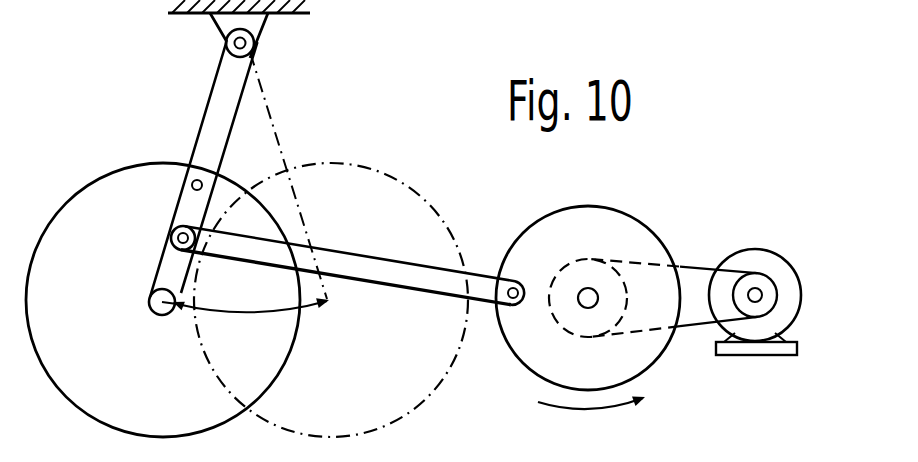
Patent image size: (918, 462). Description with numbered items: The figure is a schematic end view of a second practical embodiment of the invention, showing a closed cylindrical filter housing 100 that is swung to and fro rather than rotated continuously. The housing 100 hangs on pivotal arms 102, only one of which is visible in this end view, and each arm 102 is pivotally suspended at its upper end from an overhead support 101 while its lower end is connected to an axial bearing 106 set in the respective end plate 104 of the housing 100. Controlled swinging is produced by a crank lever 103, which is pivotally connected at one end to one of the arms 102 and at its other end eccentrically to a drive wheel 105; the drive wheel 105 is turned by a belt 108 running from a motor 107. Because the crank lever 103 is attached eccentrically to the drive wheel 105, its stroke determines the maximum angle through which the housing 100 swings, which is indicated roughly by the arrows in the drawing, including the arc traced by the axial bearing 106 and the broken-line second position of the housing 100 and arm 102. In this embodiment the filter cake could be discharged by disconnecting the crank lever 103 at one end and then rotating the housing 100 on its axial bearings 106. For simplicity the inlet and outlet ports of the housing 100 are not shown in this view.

The filter housing 100 is at (92, 216).
The overhead support 101 is at (257, 23).
The pivotal arm 102 is at (213, 116).
The crank lever 103 is at (395, 274).
The end plate 104 is at (112, 416).
The drive wheel 105 is at (633, 222).
The axial bearing 106 is at (148, 308).
The motor 107 is at (775, 262).
The belt 108 is at (694, 269).